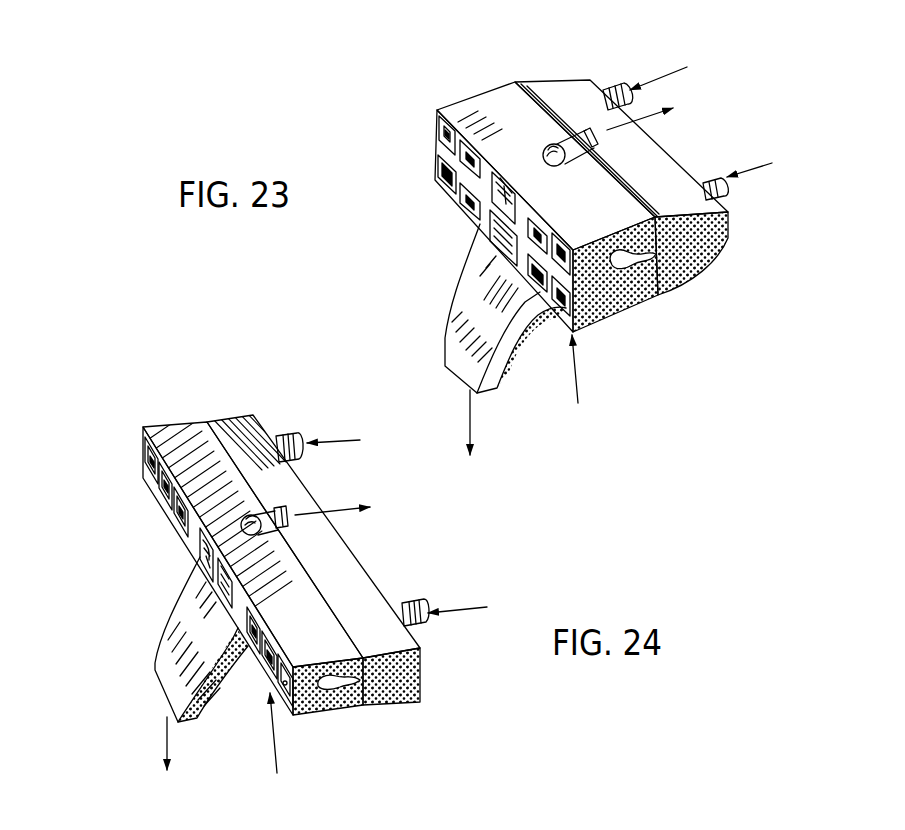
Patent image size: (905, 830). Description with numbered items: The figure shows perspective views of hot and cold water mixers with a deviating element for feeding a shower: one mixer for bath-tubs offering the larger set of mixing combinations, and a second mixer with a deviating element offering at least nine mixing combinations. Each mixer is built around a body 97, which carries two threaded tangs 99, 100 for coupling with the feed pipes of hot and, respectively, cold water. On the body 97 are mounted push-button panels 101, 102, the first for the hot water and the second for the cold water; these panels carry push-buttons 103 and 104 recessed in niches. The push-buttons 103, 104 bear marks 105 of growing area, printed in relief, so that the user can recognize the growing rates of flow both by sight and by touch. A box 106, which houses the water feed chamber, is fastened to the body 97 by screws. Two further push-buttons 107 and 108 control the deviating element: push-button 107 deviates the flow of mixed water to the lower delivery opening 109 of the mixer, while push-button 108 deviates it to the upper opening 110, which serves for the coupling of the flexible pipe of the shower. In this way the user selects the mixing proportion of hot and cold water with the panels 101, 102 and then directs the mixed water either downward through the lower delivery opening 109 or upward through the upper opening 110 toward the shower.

In FIG. 23, the body 97 is at (608, 302).
In FIG. 24, the body 97 is at (320, 700).
In FIG. 23, the threaded tang 99 is at (612, 88).
In FIG. 24, the threaded tang 99 is at (283, 433).
In FIG. 23, the threaded tang 100 is at (712, 180).
In FIG. 24, the threaded tang 100 is at (412, 603).
In FIG. 23, the push-button panel 101 is at (428, 178).
In FIG. 24, the push-button panel 101 is at (148, 500).
In FIG. 23, the push-button panel 102 is at (590, 382).
In FIG. 24, the push-button panel 102 is at (275, 745).
In FIG. 23, the push-button 103 is at (442, 128).
In FIG. 24, the push-button 103 is at (145, 450).
In FIG. 23, the push-button 104 is at (558, 236).
In FIG. 24, the push-button 104 is at (280, 658).
In FIG. 23, the mark 105 is at (440, 182).
In FIG. 24, the mark 105 is at (168, 486).
In FIG. 23, the box 106 is at (662, 168).
In FIG. 24, the box 106 is at (348, 568).
In FIG. 23, the push-button 107 is at (497, 250).
In FIG. 24, the push-button 107 is at (225, 583).
In FIG. 23, the push-button 108 is at (493, 180).
In FIG. 24, the push-button 108 is at (203, 543).
In FIG. 23, the lower delivery opening 109 is at (462, 355).
In FIG. 24, the lower delivery opening 109 is at (163, 672).
In FIG. 23, the upper opening 110 is at (558, 160).
In FIG. 24, the upper opening 110 is at (263, 517).